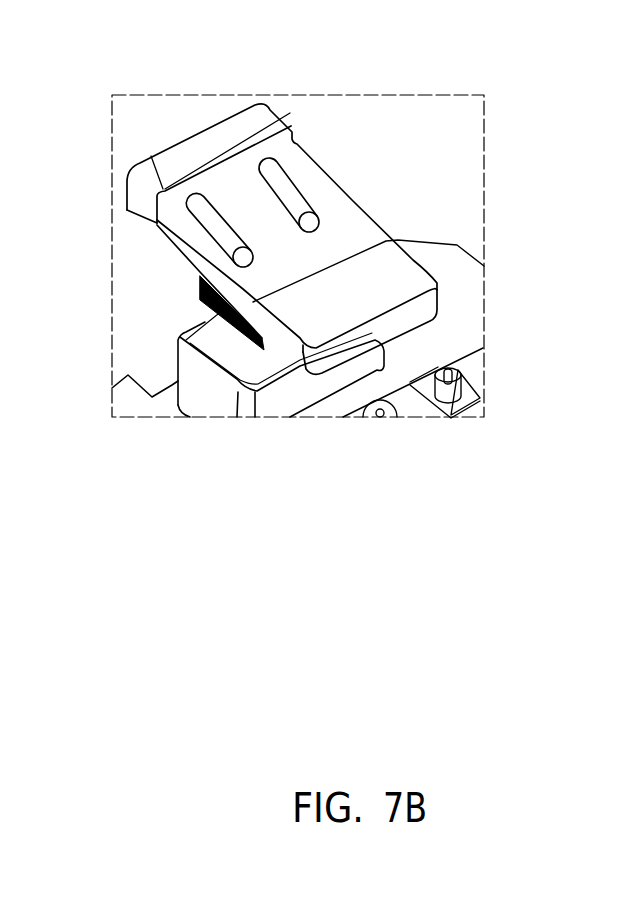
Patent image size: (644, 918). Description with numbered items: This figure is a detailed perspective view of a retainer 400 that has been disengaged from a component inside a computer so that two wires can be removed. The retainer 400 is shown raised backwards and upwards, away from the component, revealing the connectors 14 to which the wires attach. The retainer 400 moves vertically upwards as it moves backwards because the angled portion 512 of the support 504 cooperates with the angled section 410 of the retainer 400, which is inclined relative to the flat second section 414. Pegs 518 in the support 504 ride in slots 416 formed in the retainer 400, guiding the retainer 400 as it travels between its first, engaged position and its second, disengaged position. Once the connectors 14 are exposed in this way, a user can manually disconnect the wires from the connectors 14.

The retainer 400 is at (357, 231).
The angled section 410 is at (297, 141).
The flat second section 414 is at (402, 271).
The slots 416 is at (188, 203).
The pegs 518 is at (308, 222).
The angled portion 512 is at (205, 302).
The support 504 is at (213, 345).
The connectors 14 is at (393, 417).